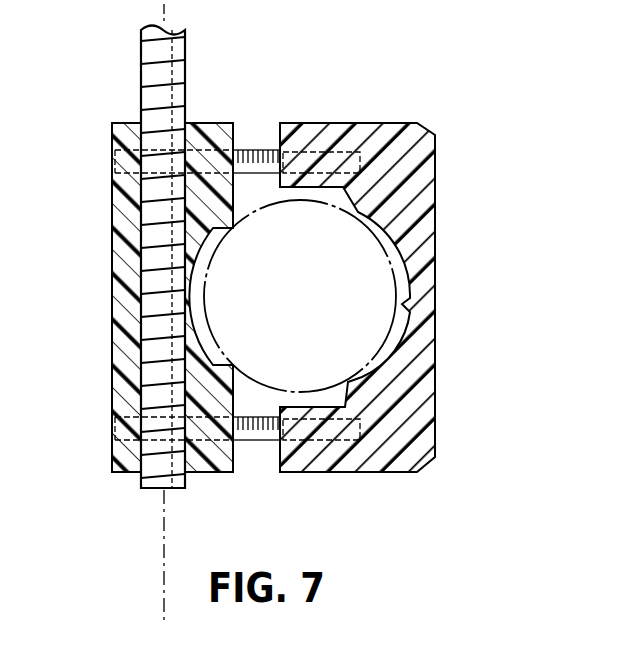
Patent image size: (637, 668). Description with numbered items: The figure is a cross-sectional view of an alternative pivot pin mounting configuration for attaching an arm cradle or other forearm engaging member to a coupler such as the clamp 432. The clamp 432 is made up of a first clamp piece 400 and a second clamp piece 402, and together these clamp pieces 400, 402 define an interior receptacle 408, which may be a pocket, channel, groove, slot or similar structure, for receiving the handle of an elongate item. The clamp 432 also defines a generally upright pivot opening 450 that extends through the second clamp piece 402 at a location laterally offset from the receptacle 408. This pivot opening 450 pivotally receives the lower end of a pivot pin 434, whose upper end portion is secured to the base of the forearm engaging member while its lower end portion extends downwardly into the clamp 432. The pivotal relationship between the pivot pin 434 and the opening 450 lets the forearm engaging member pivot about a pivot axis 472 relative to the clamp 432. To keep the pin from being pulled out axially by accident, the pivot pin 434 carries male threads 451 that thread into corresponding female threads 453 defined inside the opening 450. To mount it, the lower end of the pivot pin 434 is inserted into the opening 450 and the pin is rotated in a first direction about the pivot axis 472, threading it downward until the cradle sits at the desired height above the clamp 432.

The first clamp piece 400 is at (317, 289).
The second clamp piece 402 is at (216, 474).
The interior receptacle 408 is at (395, 252).
The clamp 432 is at (437, 118).
The pivot pin 434 is at (141, 255).
The pivot opening 450 is at (236, 126).
The male threads 451 is at (176, 58).
The female threads 453 is at (174, 128).
The pivot axis 472 is at (163, 560).